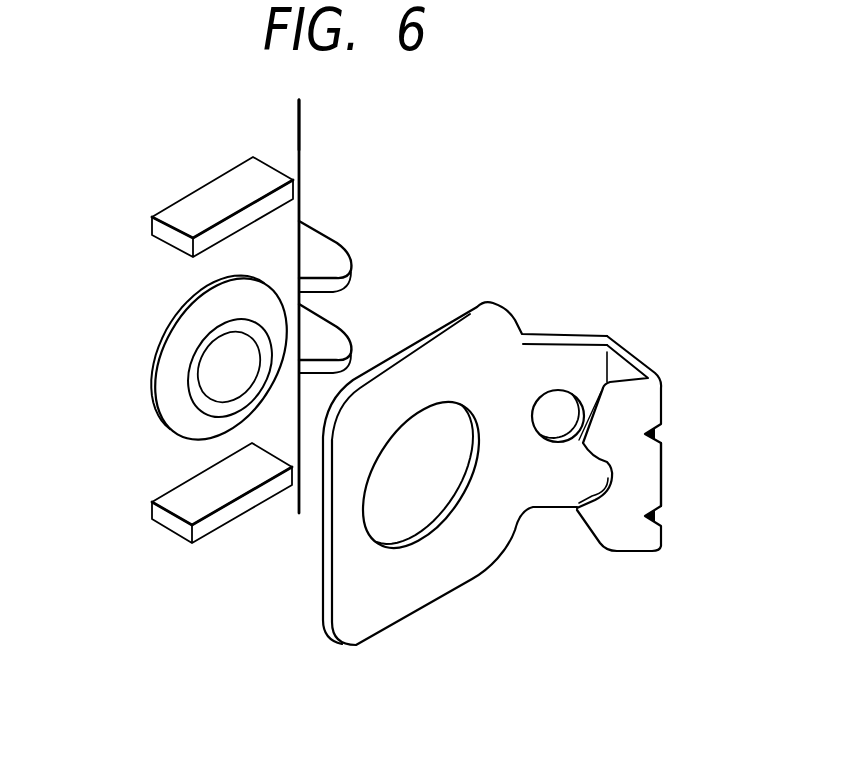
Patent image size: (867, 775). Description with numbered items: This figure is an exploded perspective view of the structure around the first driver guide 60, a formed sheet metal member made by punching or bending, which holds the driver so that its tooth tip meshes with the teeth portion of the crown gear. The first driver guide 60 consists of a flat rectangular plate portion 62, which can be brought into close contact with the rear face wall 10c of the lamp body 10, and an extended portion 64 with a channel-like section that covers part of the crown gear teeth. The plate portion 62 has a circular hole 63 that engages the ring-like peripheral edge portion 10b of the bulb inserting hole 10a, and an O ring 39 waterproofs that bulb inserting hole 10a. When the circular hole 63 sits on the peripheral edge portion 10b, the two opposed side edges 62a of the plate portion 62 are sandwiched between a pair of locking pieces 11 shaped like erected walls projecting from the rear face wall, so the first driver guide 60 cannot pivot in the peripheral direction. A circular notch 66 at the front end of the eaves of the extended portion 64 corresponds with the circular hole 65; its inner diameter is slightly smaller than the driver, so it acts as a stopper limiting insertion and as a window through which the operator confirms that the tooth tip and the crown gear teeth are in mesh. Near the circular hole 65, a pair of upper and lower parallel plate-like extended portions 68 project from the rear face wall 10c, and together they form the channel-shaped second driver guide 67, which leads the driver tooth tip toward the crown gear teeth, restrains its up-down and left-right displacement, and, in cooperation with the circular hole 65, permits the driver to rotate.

The lamp body 10 is at (300, 168).
The bulb inserting hole 10a is at (210, 392).
The ring-like peripheral edge portion of the bulb inserting hole 10b is at (184, 328).
The rear face wall of the lamp body 10c is at (240, 125).
The locking piece 11 is at (202, 195).
The O ring 39 is at (189, 388).
The first driver guide 60 is at (533, 483).
The plate portion 62 is at (467, 483).
The side edge 62a is at (469, 305).
The circular hole 63 is at (410, 555).
The extended portion 64 is at (632, 537).
The circular hole 65 is at (566, 443).
The circular notch 66 is at (662, 465).
The second driver guide 67 is at (331, 311).
The extended portion 68 is at (337, 233).